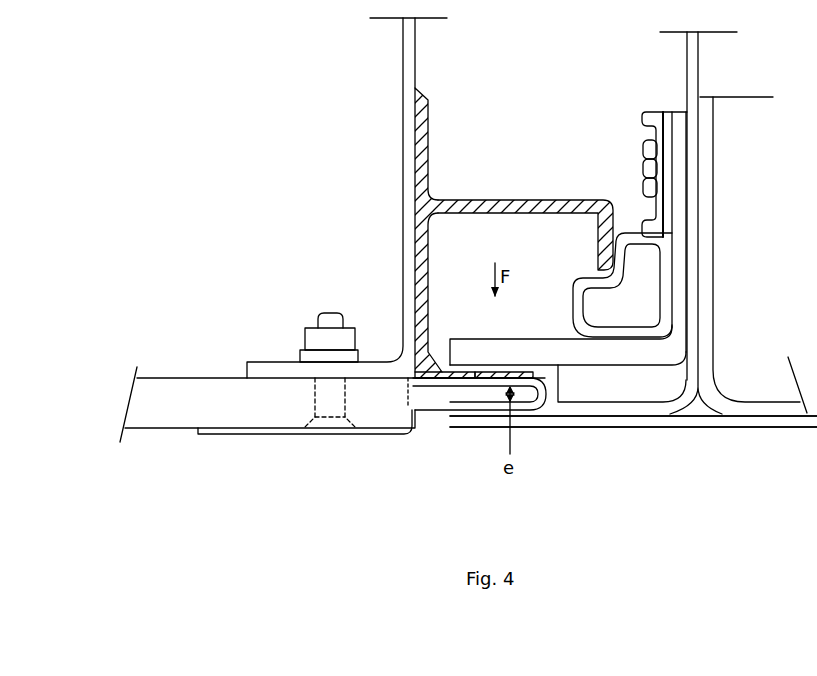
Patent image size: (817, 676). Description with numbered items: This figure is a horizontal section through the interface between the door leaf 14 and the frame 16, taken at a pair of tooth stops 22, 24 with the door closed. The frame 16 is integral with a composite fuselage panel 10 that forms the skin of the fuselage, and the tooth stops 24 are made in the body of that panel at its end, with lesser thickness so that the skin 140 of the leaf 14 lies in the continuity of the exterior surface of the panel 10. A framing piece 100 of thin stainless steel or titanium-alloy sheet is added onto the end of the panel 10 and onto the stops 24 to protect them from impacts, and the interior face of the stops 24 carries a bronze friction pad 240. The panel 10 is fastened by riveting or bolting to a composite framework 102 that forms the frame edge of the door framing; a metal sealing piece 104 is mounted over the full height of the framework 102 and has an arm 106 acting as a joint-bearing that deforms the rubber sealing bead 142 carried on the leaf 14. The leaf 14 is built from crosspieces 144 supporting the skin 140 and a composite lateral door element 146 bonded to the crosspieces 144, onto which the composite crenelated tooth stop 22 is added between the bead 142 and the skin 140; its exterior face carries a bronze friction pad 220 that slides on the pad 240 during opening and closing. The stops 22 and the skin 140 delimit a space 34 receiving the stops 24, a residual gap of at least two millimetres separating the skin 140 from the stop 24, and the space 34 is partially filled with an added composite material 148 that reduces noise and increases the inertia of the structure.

The fuselage panel 10 is at (165, 407).
The leaf 14 is at (672, 444).
The frame 16 is at (400, 454).
The tooth stop 22 is at (573, 347).
The tooth stop 24 is at (477, 392).
The space 34 is at (555, 417).
The framing piece 100 is at (262, 444).
The framework 102 is at (408, 160).
The sealing piece 104 is at (445, 181).
The arm 106 is at (543, 207).
The skin 140 is at (705, 420).
The sealing bead 142 is at (663, 310).
The crosspieces 144 is at (708, 268).
The lateral door element 146 is at (693, 232).
The added composite material 148 is at (640, 388).
The friction pad 220 is at (516, 359).
The friction pad 240 is at (442, 371).